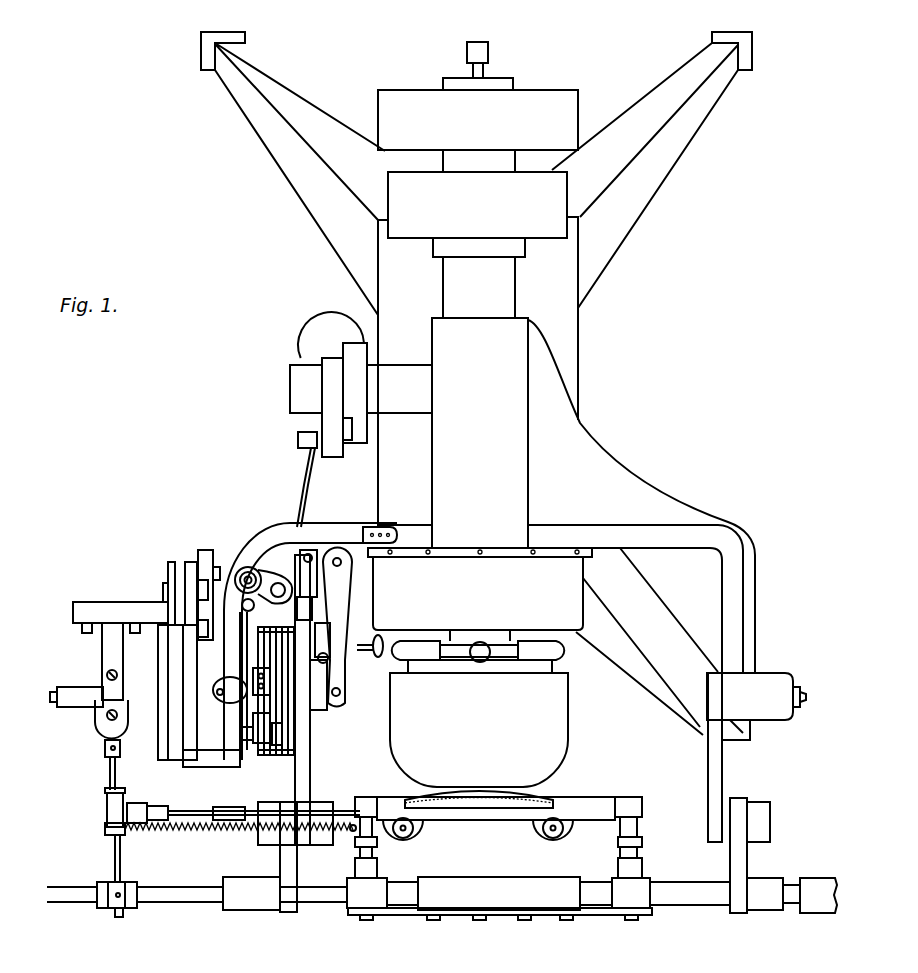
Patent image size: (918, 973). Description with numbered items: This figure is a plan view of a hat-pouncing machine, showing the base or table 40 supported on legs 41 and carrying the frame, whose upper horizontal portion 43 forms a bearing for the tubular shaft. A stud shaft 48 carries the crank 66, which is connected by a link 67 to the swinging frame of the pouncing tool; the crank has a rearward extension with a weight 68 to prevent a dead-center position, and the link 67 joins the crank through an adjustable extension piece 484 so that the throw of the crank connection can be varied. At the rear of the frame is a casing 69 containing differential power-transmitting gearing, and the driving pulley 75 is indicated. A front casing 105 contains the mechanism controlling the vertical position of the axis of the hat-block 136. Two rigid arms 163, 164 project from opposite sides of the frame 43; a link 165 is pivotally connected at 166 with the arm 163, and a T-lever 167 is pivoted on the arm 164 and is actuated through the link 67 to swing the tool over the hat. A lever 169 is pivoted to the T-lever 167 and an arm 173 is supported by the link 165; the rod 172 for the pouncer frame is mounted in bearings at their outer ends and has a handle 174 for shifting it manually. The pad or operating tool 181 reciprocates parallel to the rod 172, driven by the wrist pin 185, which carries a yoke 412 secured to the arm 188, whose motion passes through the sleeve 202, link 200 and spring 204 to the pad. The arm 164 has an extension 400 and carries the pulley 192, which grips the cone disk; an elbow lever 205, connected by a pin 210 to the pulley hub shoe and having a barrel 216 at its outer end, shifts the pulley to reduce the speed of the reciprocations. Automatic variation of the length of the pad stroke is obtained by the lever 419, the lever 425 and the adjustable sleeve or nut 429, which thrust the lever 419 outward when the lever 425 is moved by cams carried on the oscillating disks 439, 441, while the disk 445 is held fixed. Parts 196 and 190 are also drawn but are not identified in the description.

The legs 41 is at (308, 105).
The driving pulley 75 is at (478, 107).
The casing 69 is at (477, 245).
The upper horizontal portion of the frame 43 is at (512, 342).
The base or table 40 is at (565, 362).
The stud shaft 48 is at (303, 377).
The weight 68 is at (322, 320).
The crank 66 is at (332, 390).
The extension piece 484 is at (315, 420).
The link 67 is at (305, 477).
The elbow lever 205 is at (327, 527).
The front casing 105 is at (478, 599).
The sleeve or elongated nut 429 is at (385, 638).
The hat-block 136 is at (479, 730).
The pad or operating tool 181 is at (483, 813).
The rigid arm 163 is at (735, 528).
The pivotal connection 166 is at (813, 708).
The link 165 is at (718, 765).
The arm 173 is at (742, 857).
The handle 174 is at (823, 883).
The rod 172 is at (203, 892).
The rigid arm 164 is at (257, 517).
The lever 425 is at (330, 597).
The lever 419 is at (343, 577).
The T-lever 167 is at (303, 780).
The disk 441 is at (290, 746).
The disk 445 is at (275, 718).
The disk 439 is at (260, 757).
The plate 196 is at (180, 577).
The pin 210 is at (220, 692).
The pulley 192 is at (180, 740).
The barrel 216 is at (220, 747).
The extension 400 is at (128, 608).
The wrist pin 185 is at (62, 690).
The yoke 412 is at (90, 702).
The sleeve 202 is at (112, 812).
The arm 188 is at (110, 850).
The clamp 190 is at (130, 903).
The link 200 is at (197, 813).
The spring 204 is at (197, 835).
The lever 169 is at (288, 868).